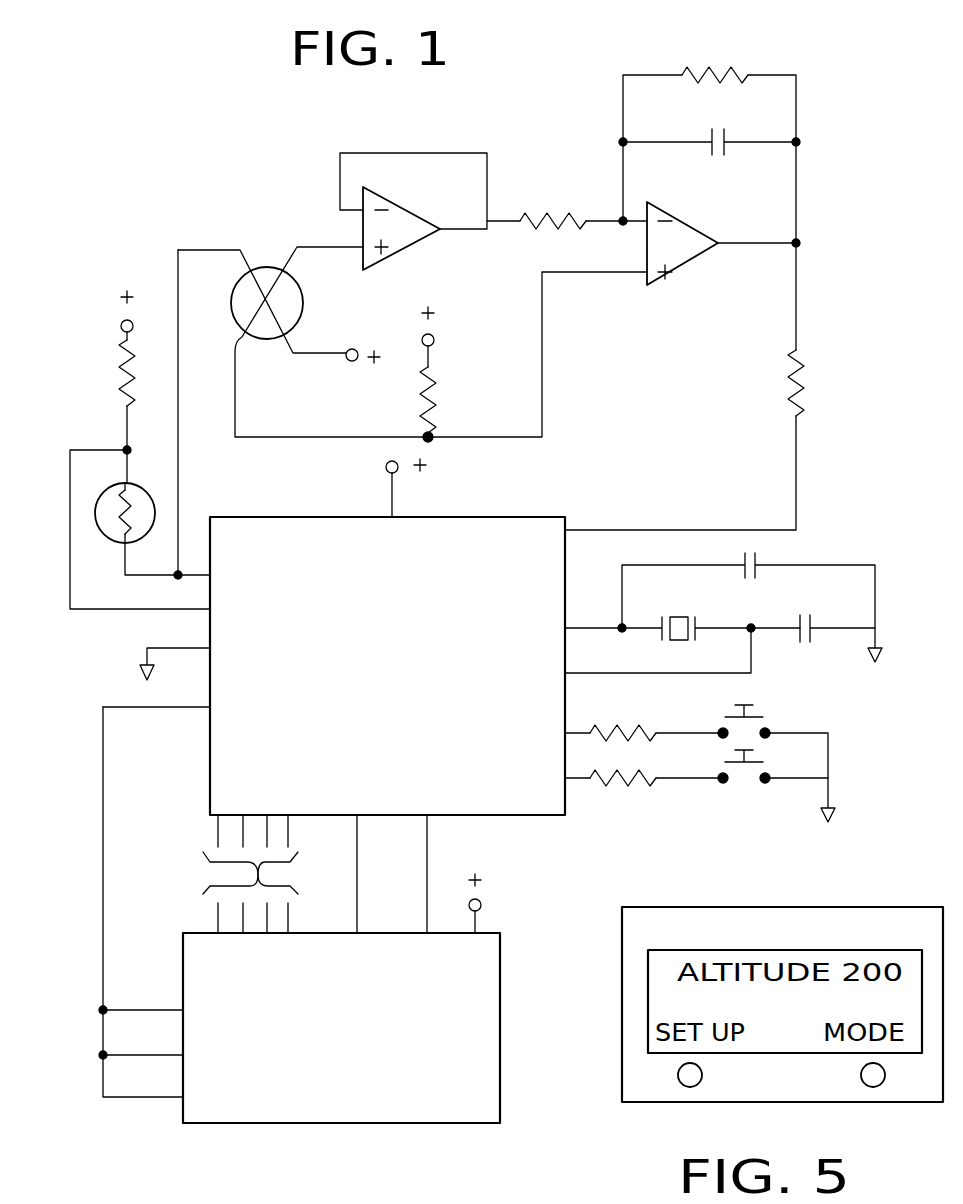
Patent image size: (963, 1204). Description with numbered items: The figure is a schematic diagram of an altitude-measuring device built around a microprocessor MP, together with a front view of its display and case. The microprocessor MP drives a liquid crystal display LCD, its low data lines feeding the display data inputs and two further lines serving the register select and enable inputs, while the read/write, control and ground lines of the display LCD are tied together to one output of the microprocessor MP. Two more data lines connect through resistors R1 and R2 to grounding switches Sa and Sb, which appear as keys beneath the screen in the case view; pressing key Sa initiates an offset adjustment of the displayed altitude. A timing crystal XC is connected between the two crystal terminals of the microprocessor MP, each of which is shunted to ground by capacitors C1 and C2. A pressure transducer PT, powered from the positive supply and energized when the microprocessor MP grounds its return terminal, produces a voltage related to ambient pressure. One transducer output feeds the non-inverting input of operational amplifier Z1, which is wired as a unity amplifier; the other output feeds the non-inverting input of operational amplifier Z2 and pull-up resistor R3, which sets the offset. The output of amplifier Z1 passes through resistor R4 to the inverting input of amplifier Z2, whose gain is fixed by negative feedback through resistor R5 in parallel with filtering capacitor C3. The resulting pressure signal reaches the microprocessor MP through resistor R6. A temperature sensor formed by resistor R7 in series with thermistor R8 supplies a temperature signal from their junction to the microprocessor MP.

In FIG. 1, the operational amplifier Z1 is at (404, 248).
In FIG. 1, the operational amplifier Z2 is at (679, 258).
In FIG. 1, the resistor R1 is at (640, 786).
In FIG. 1, the resistor R2 is at (660, 691).
In FIG. 1, the pull-up resistor R3 is at (433, 399).
In FIG. 1, the resistor R4 is at (572, 184).
In FIG. 1, the resistor R5 is at (742, 72).
In FIG. 1, the resistor R6 is at (713, 386).
In FIG. 1, the resistor R7 is at (120, 366).
In FIG. 1, the thermistor R8 is at (161, 480).
In FIG. 1, the capacitor C1 is at (812, 588).
In FIG. 1, the capacitor C2 is at (760, 548).
In FIG. 1, the filtering capacitor C3 is at (704, 146).
In FIG. 1, the pressure transducer PT is at (272, 264).
In FIG. 1, the timing crystal XC is at (670, 612).
In FIG. 1, the microprocessor MP is at (414, 648).
In FIG. 1, the display means LCD is at (388, 1048).
In FIG. 1, the grounding switch Sa is at (752, 786).
In FIG. 5, the grounding switch Sa is at (683, 1085).
In FIG. 1, the grounding switch Sb is at (768, 728).
In FIG. 5, the grounding switch Sb is at (867, 1085).